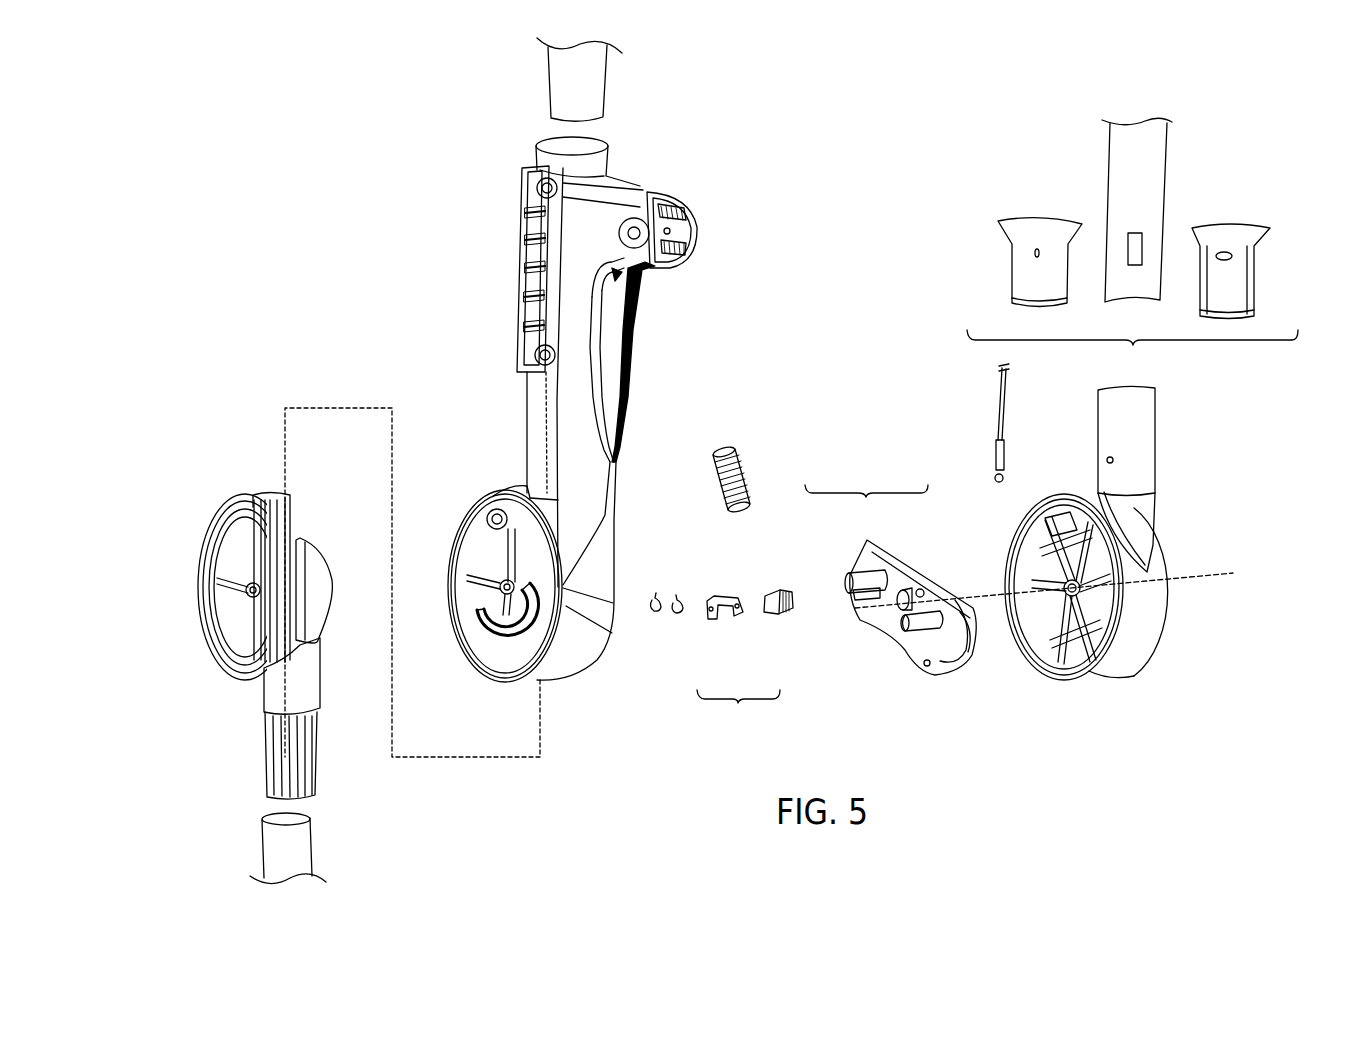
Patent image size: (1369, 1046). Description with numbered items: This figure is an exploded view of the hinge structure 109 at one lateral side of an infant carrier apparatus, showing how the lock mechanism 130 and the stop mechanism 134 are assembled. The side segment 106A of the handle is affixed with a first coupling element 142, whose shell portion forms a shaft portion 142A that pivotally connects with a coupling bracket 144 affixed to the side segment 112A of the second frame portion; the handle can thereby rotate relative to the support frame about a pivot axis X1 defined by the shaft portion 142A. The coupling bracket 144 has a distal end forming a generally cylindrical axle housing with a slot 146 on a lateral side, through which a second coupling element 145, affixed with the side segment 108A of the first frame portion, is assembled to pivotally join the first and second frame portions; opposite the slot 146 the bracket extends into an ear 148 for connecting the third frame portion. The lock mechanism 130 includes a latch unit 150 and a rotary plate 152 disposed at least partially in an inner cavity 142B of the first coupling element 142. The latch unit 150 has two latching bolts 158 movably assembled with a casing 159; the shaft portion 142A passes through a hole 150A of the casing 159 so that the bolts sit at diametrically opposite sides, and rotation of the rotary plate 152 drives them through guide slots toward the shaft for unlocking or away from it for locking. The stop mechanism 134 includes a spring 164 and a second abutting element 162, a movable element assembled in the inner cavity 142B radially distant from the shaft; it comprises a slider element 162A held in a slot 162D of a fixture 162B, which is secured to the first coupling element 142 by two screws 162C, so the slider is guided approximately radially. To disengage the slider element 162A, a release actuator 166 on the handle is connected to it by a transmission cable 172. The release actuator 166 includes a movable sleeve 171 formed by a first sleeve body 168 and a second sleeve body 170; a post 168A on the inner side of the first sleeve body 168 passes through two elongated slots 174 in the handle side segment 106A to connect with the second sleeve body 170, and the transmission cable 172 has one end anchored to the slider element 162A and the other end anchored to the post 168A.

The hinge structure 109 is at (418, 196).
The side segment of the second frame portion 112A is at (554, 92).
The coupling bracket 144 is at (537, 410).
The second coupling element 145 is at (222, 520).
The slot 146 is at (569, 662).
The ear 148 is at (648, 277).
The side segment of the first frame portion 108A is at (303, 836).
The spring 164 is at (740, 452).
The stop mechanism 134 is at (697, 540).
The second abutting element 162 is at (716, 636).
The slider element 162A is at (768, 591).
The fixture 162B is at (740, 623).
The screws 162C is at (677, 600).
The slot 162D is at (722, 630).
The lock mechanism 130 is at (902, 577).
The latch unit 150 is at (890, 544).
The rotary plate 152 is at (871, 553).
The latching bolts 158 is at (855, 573).
The hole 150A is at (889, 620).
The casing 159 is at (958, 655).
The pivot axis X1 is at (1233, 578).
The transmission cable 172 is at (993, 406).
The first coupling element 142 is at (1143, 646).
The shaft portion 142A is at (1118, 545).
The inner cavity 142B is at (1060, 516).
The release actuator 166 is at (1021, 150).
The side segment of the handle 106A is at (1117, 143).
The elongated slots 174 is at (1138, 236).
The second sleeve body 170 is at (1023, 279).
The first sleeve body 168 is at (1242, 287).
The post 168A is at (1233, 255).
The movable sleeve 171 is at (1132, 351).